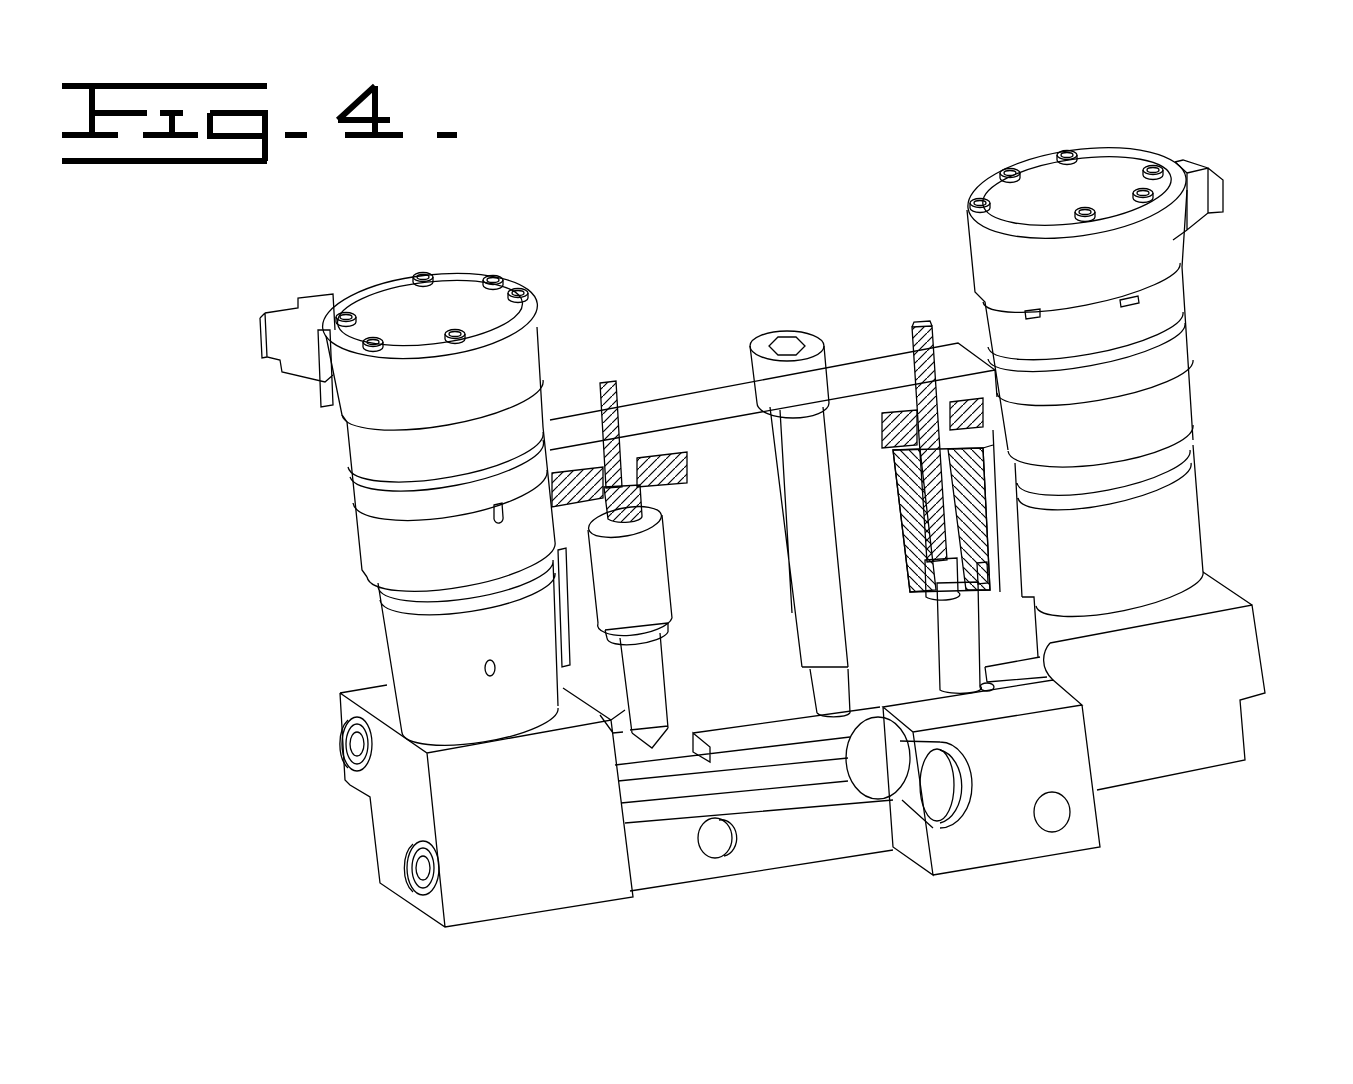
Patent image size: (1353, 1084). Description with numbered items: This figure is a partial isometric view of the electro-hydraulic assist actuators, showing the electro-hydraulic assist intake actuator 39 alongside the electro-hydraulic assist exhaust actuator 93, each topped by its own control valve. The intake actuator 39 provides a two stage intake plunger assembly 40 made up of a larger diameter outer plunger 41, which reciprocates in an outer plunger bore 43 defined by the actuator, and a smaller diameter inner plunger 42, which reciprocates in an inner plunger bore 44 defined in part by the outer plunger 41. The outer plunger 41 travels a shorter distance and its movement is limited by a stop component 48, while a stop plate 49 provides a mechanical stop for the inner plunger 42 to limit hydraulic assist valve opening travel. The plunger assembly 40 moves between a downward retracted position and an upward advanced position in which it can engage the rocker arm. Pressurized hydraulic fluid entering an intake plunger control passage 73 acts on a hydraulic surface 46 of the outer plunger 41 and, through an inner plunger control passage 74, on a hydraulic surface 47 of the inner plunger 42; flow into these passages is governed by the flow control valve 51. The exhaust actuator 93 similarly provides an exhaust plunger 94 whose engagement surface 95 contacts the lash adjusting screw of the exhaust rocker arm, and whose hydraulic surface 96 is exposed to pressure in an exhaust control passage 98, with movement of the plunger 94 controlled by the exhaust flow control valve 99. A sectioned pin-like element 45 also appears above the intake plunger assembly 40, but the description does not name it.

The electro-hydraulic assist intake actuator 39 is at (1252, 255).
The intake plunger assembly 40 is at (1010, 503).
The outer plunger 41 is at (1005, 530).
The inner plunger 42 is at (975, 447).
The outer plunger bore 43 is at (988, 562).
The inner plunger bore 44 is at (940, 528).
The pin 45 is at (920, 327).
The hydraulic surface 46 is at (982, 582).
The hydraulic surface 47 is at (928, 590).
The stop component 48 is at (885, 443).
The stop plate 49 is at (670, 443).
The flow control valve 51 is at (1208, 360).
The intake plunger control passage 73 is at (990, 688).
The inner plunger control passage 74 is at (955, 617).
The electro-hydraulic assist exhaust actuator 93 is at (308, 506).
The exhaust plunger 94 is at (678, 540).
The engagement surface 95 is at (608, 381).
The hydraulic surface 96 is at (660, 623).
The exhaust control passage 98 is at (650, 657).
The exhaust flow control valve 99 is at (362, 592).